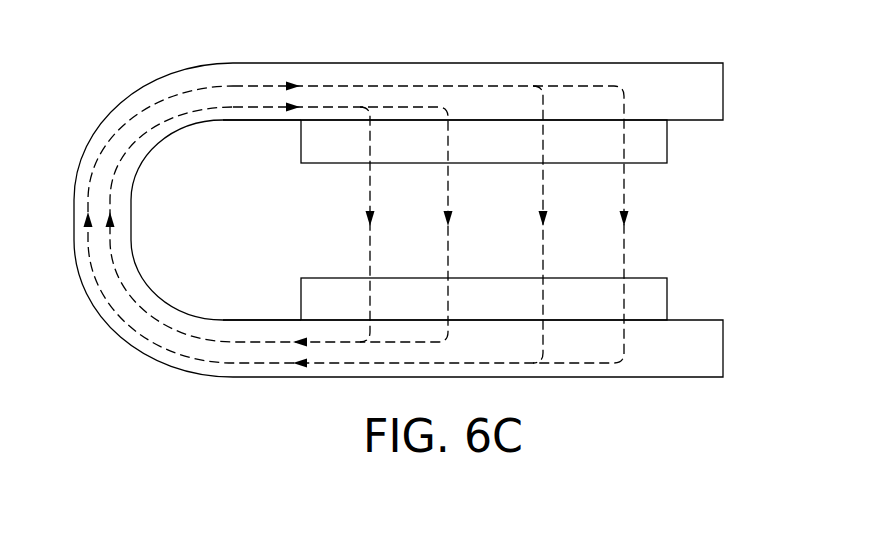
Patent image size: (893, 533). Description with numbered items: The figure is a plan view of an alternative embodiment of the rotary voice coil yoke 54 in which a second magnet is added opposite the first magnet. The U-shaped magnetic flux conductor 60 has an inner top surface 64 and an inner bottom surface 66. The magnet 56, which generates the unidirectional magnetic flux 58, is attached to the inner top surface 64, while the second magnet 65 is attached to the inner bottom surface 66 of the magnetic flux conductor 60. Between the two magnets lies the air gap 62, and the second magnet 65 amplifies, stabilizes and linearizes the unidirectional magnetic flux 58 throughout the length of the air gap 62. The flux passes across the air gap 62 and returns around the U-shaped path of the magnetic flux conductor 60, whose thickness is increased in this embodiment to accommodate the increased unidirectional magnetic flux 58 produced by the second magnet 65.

The rotary voice coil yoke 54 is at (432, 188).
The magnet 56 is at (667, 147).
The unidirectional magnetic flux 58 is at (622, 250).
The magnetic flux conductor 60 is at (723, 95).
The air gap 62 is at (301, 165).
The inner top surface 64 is at (245, 122).
The second magnet 65 is at (667, 300).
The inner bottom surface 66 is at (245, 317).